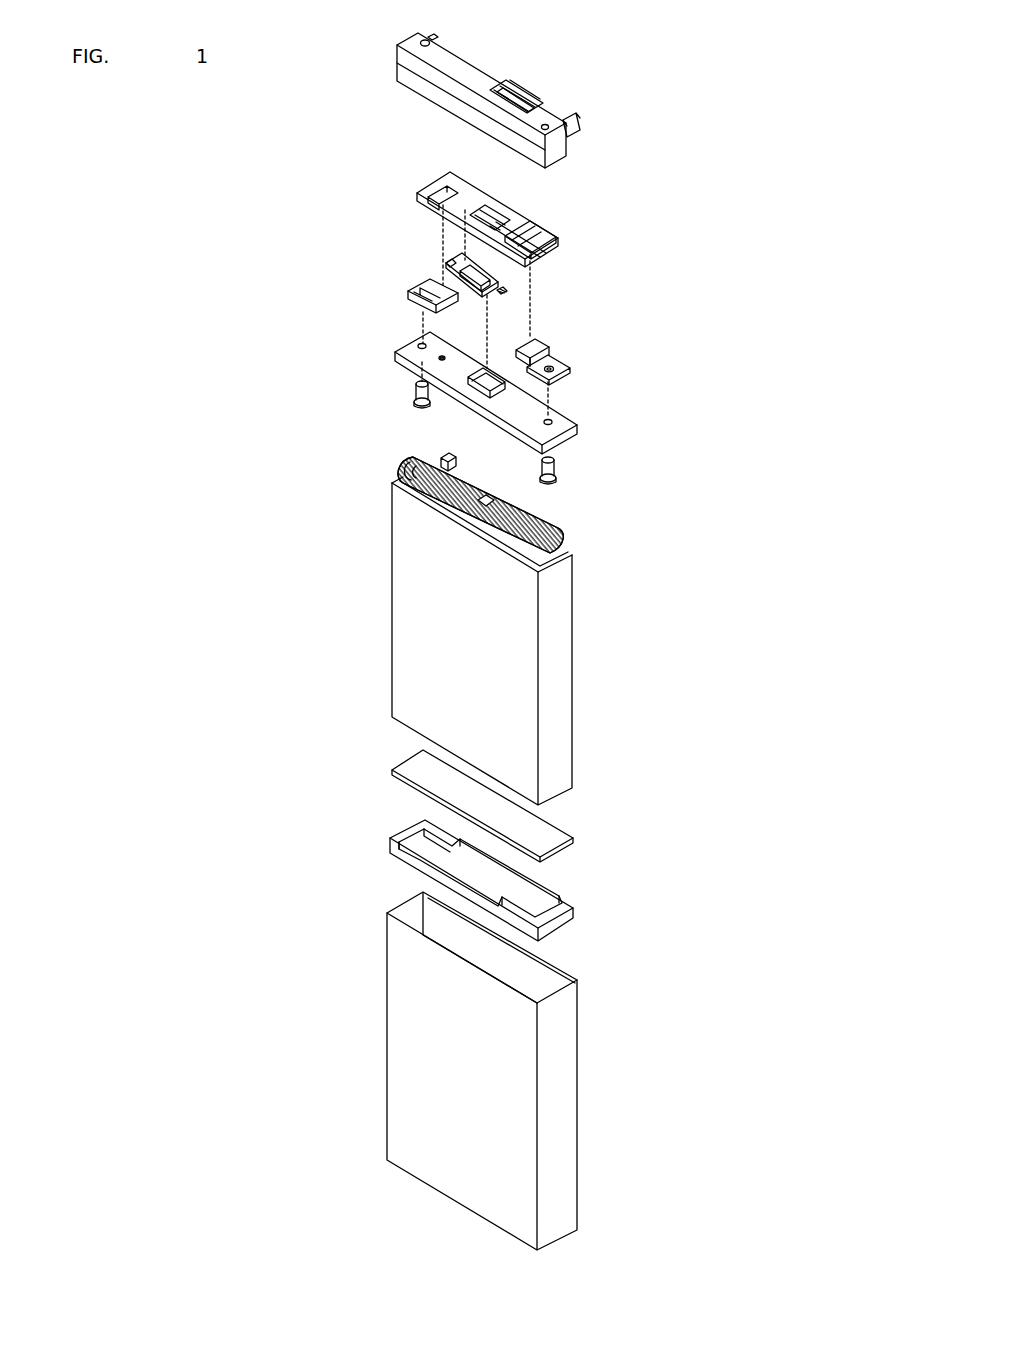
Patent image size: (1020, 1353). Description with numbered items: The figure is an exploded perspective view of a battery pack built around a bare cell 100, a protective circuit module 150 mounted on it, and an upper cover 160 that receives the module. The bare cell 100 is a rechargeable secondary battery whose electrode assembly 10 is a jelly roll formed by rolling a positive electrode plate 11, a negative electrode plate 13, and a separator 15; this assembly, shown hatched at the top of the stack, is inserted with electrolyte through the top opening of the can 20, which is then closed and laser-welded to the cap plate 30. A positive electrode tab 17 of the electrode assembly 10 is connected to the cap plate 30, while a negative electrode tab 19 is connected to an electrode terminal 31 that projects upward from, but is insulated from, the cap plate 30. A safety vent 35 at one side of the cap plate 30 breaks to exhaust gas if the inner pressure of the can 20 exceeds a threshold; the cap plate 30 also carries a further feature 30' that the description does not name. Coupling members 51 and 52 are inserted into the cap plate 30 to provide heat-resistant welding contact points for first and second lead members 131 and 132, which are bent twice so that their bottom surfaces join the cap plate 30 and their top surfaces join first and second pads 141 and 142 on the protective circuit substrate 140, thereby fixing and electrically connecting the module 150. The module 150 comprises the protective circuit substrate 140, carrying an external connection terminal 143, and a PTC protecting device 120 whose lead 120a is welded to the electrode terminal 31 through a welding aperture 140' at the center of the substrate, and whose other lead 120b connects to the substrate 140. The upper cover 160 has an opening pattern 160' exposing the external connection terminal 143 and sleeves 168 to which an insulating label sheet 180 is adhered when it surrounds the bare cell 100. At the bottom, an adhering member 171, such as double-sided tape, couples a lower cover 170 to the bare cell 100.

The upper cover 160 is at (438, 100).
The opening pattern 160' is at (548, 78).
The sleeves 168 is at (580, 135).
The protective circuit substrate 140 is at (537, 219).
The welding aperture 140' is at (526, 206).
The first pad 141 is at (553, 236).
The second pad 142 is at (427, 188).
The external connection terminal 143 is at (543, 222).
The PTC protecting device 120 is at (505, 290).
The lead 120a is at (517, 295).
The lead 120b is at (453, 258).
The protective circuit module 150 is at (658, 245).
The second lead member 132 is at (410, 295).
The cap plate 30 is at (539, 405).
The cap plate hole 30' is at (386, 335).
The safety vent 35 is at (437, 358).
The electrode terminal 31 is at (480, 370).
The first lead member 131 is at (574, 370).
The coupling member 52 is at (414, 392).
The coupling member 51 is at (557, 473).
The electrode assembly 10 is at (648, 512).
The negative electrode plate 13 is at (562, 537).
The separator 15 is at (572, 538).
The positive electrode plate 11 is at (567, 547).
The positive electrode tab 17 is at (446, 452).
The negative electrode tab 19 is at (486, 494).
The can 20 is at (560, 668).
The bare cell 100 is at (686, 468).
The adhering member 171 is at (575, 839).
The lower cover 170 is at (577, 914).
The insulating label sheet 180 is at (560, 1088).